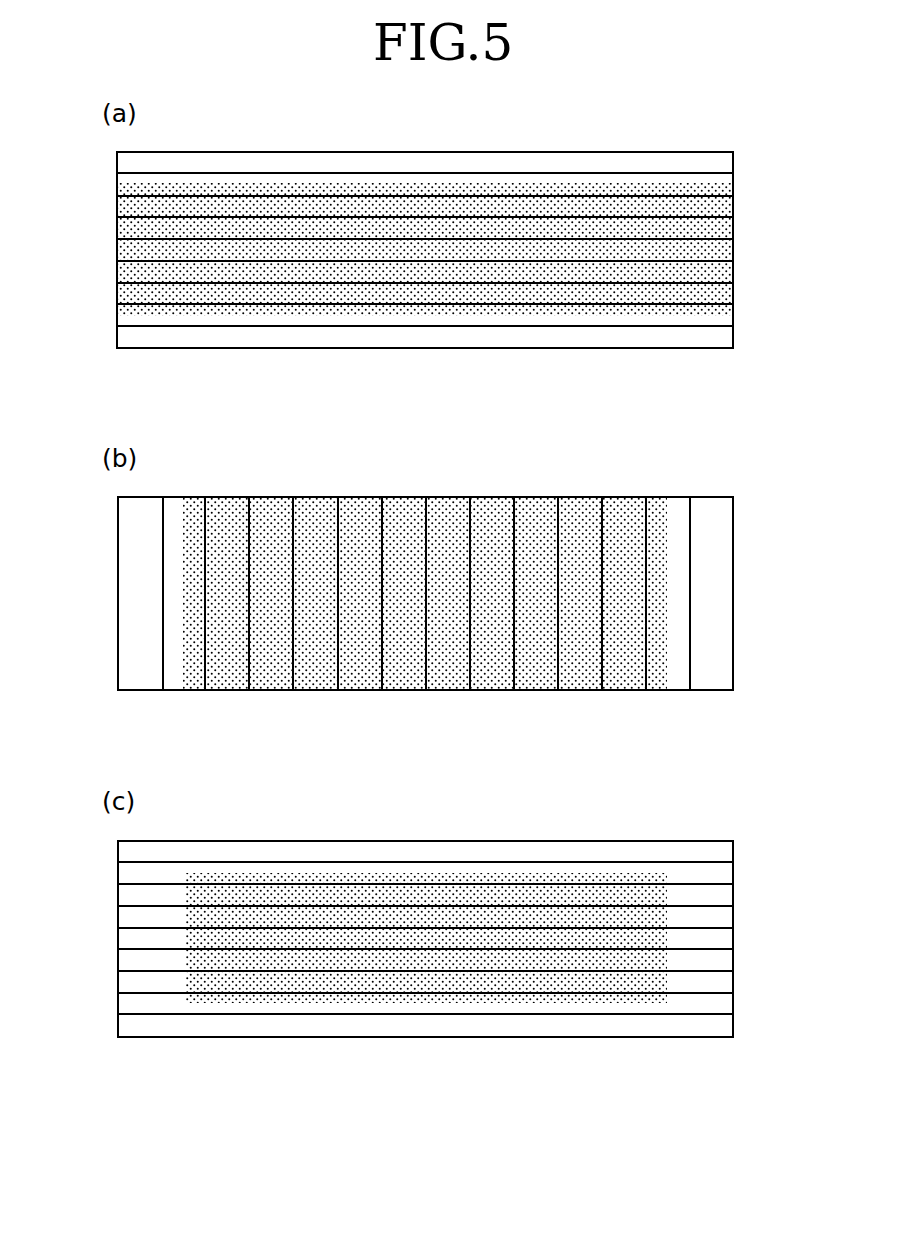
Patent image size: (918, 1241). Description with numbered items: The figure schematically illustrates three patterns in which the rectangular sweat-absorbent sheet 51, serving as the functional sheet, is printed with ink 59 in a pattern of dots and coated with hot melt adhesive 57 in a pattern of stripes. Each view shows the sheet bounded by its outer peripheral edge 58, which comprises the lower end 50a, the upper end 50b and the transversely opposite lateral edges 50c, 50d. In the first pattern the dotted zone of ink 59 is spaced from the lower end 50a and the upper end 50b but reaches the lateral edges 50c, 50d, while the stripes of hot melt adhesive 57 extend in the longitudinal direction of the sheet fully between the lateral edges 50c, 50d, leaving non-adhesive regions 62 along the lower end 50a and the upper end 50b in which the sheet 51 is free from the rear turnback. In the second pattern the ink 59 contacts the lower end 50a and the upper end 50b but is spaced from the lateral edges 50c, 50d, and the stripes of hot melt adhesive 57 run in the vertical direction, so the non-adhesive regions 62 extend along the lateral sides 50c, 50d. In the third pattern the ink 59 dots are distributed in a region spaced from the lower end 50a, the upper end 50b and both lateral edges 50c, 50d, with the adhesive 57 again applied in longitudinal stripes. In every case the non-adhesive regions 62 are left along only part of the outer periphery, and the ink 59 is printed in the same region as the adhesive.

The sweat-absorbent sheet 51 is at (735, 183).
The ink 59 is at (573, 205).
The outer peripheral edge 58 is at (713, 960).
The non-adhesive region 62 is at (290, 163).
The hot melt adhesive 57 is at (713, 327).
The lower end 50a is at (401, 349).
The upper end 50b is at (402, 152).
The lateral edge 50c is at (117, 291).
The lateral edge 50d is at (733, 293).